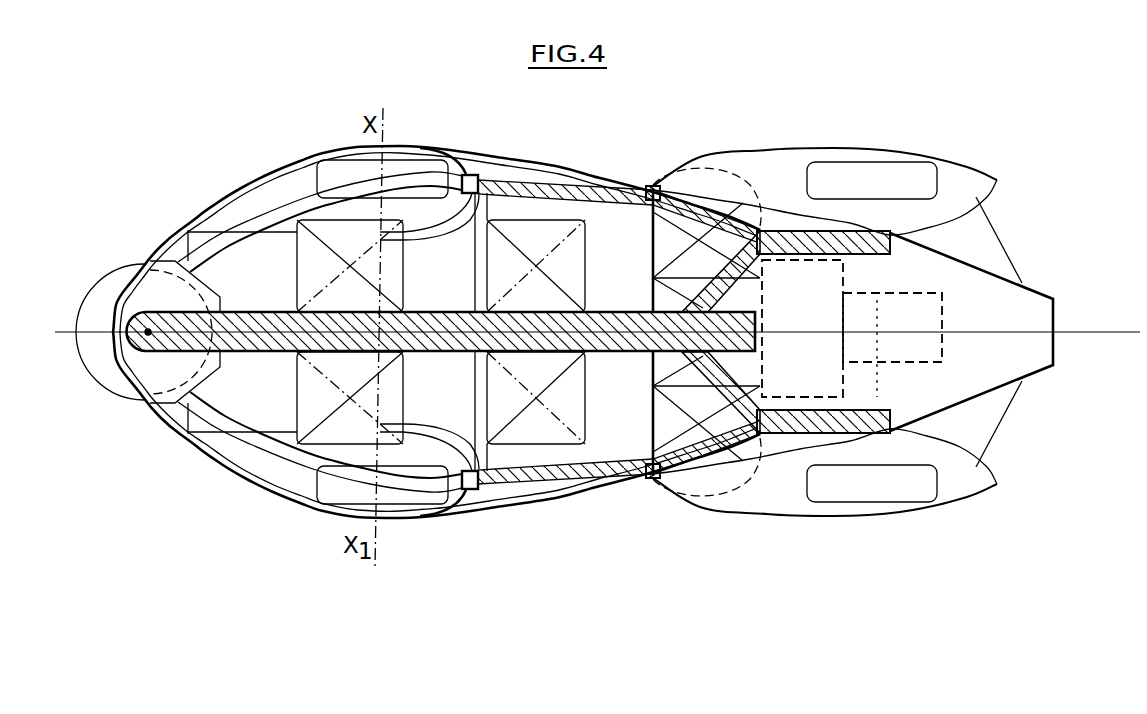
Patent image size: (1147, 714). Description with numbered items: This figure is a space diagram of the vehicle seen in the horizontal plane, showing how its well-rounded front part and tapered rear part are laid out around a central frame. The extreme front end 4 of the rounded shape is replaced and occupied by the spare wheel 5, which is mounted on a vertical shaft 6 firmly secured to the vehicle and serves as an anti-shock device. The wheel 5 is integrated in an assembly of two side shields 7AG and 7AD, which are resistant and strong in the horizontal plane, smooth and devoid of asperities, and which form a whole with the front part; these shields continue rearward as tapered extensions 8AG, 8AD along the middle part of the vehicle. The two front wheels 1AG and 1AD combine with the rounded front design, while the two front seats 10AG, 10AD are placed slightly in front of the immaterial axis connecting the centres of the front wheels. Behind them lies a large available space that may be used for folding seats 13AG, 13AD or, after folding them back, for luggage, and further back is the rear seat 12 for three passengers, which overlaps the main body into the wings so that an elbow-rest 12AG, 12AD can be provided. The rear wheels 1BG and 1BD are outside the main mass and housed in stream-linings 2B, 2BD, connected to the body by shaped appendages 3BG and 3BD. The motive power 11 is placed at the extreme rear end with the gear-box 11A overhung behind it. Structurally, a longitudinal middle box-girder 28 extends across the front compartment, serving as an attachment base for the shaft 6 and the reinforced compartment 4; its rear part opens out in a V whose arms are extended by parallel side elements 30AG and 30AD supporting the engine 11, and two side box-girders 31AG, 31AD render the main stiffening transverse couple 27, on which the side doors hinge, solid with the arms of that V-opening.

The extreme front end 4 is at (173, 268).
The spare wheel 5 is at (110, 300).
The vertical shaft 6 is at (148, 333).
The side shield 7AD is at (265, 192).
The side shield 7AG is at (247, 462).
The front seat 10AD is at (325, 230).
The front seat 10AG is at (340, 427).
The front wheel 1AD is at (400, 170).
The front wheel 1AG is at (410, 495).
The main stiffening transverse couple 27 is at (433, 267).
The tapered extension 8AD is at (527, 168).
The tapered extension 8AG is at (517, 492).
The folding seat 13AD is at (600, 177).
The folding seat 13AG is at (547, 427).
The side box-girder 31AD is at (655, 185).
The side box-girder 31AG is at (762, 447).
The elbow-rest 12AD is at (723, 190).
The elbow-rest 12AG is at (717, 472).
The rear seat 12 is at (700, 415).
The longitudinal middle box-girder 28 is at (620, 351).
The shaped appendage 3BD is at (990, 245).
The shaped appendage 3BG is at (987, 415).
The stream-lining 2BD is at (797, 160).
The stream-lining 2B is at (953, 487).
The rear wheel 1BD is at (893, 177).
The rear wheel 1BG is at (837, 490).
The parallel side element 30AD is at (985, 247).
The parallel side element 30AG is at (990, 462).
The motive power 11 is at (823, 290).
The gear-box 11A is at (920, 317).